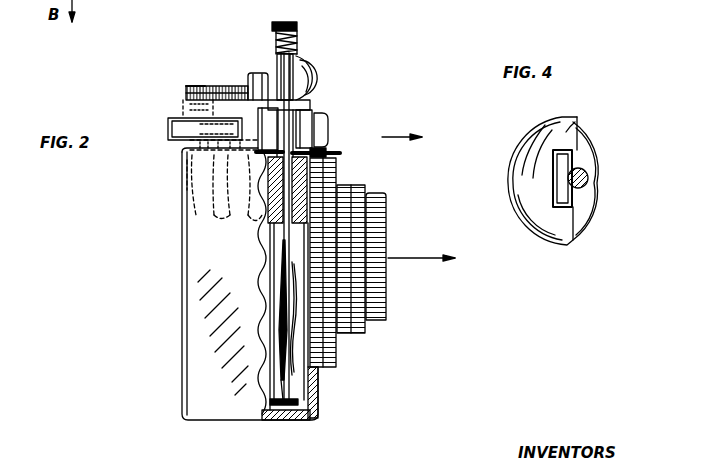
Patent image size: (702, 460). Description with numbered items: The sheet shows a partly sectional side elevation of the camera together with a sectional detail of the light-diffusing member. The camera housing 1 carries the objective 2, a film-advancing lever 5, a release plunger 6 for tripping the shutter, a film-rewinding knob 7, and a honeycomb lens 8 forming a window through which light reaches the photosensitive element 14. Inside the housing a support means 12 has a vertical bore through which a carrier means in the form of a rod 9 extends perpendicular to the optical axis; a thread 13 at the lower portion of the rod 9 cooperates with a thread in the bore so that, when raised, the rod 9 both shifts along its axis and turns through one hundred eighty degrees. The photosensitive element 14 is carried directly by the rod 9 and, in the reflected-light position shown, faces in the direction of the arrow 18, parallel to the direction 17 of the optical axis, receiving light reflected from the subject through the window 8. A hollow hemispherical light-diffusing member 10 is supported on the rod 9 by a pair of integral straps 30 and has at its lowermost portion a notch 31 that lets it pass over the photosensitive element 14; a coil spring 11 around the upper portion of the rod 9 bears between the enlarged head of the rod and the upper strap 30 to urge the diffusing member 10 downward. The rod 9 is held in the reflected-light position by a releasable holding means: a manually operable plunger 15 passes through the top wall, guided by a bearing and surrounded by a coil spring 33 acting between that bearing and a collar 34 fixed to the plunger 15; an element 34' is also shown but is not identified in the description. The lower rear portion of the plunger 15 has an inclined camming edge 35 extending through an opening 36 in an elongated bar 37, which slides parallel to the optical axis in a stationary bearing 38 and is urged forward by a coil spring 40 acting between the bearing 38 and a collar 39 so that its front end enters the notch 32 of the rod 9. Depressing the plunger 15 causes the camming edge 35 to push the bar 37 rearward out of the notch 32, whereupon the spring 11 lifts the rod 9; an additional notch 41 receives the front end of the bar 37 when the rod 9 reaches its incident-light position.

In FIG. 2, the camera housing 1 is at (188, 350).
In FIG. 2, the objective 2 is at (378, 226).
In FIG. 2, the lever 5 is at (228, 123).
In FIG. 2, the release plunger 6 is at (256, 73).
In FIG. 2, the film-rewinding knob 7 is at (236, 86).
In FIG. 2, the honeycomb lens 8 is at (328, 128).
In FIG. 2, the carrier means 9 is at (283, 23).
In FIG. 4, the carrier means 9 is at (590, 177).
In FIG. 2, the light-diffusing member 10 is at (312, 77).
In FIG. 4, the light-diffusing member 10 is at (541, 120).
In FIG. 2, the coil spring 11 is at (296, 43).
In FIG. 2, the support means 12 is at (262, 226).
In FIG. 2, the thread 13 is at (281, 300).
In FIG. 2, the photosensitive element 14 is at (315, 110).
In FIG. 4, the photosensitive element 14 is at (582, 197).
In FIG. 2, the manually operable plunger 15 is at (194, 86).
In FIG. 2, the direction of the optical axis 17 is at (420, 262).
In FIG. 2, the arrow 18 is at (393, 136).
In FIG. 2, the straps 30 is at (277, 55).
In FIG. 4, the straps 30 is at (590, 130).
In FIG. 4, the notch 31 is at (570, 130).
In FIG. 2, the notch 32 is at (328, 153).
In FIG. 2, the coil spring 33 is at (183, 105).
In FIG. 2, the collar 34 is at (174, 79).
In FIG. 2, the pawl plate 34' is at (191, 127).
In FIG. 2, the inclined camming edge 35 is at (190, 150).
In FIG. 2, the opening 36 is at (204, 185).
In FIG. 2, the elongated bar 37 is at (185, 172).
In FIG. 2, the stationary bearing 38 is at (219, 205).
In FIG. 2, the collar 39 is at (250, 200).
In FIG. 2, the coil spring 40 is at (236, 185).
In FIG. 2, the additional notch 41 is at (292, 270).